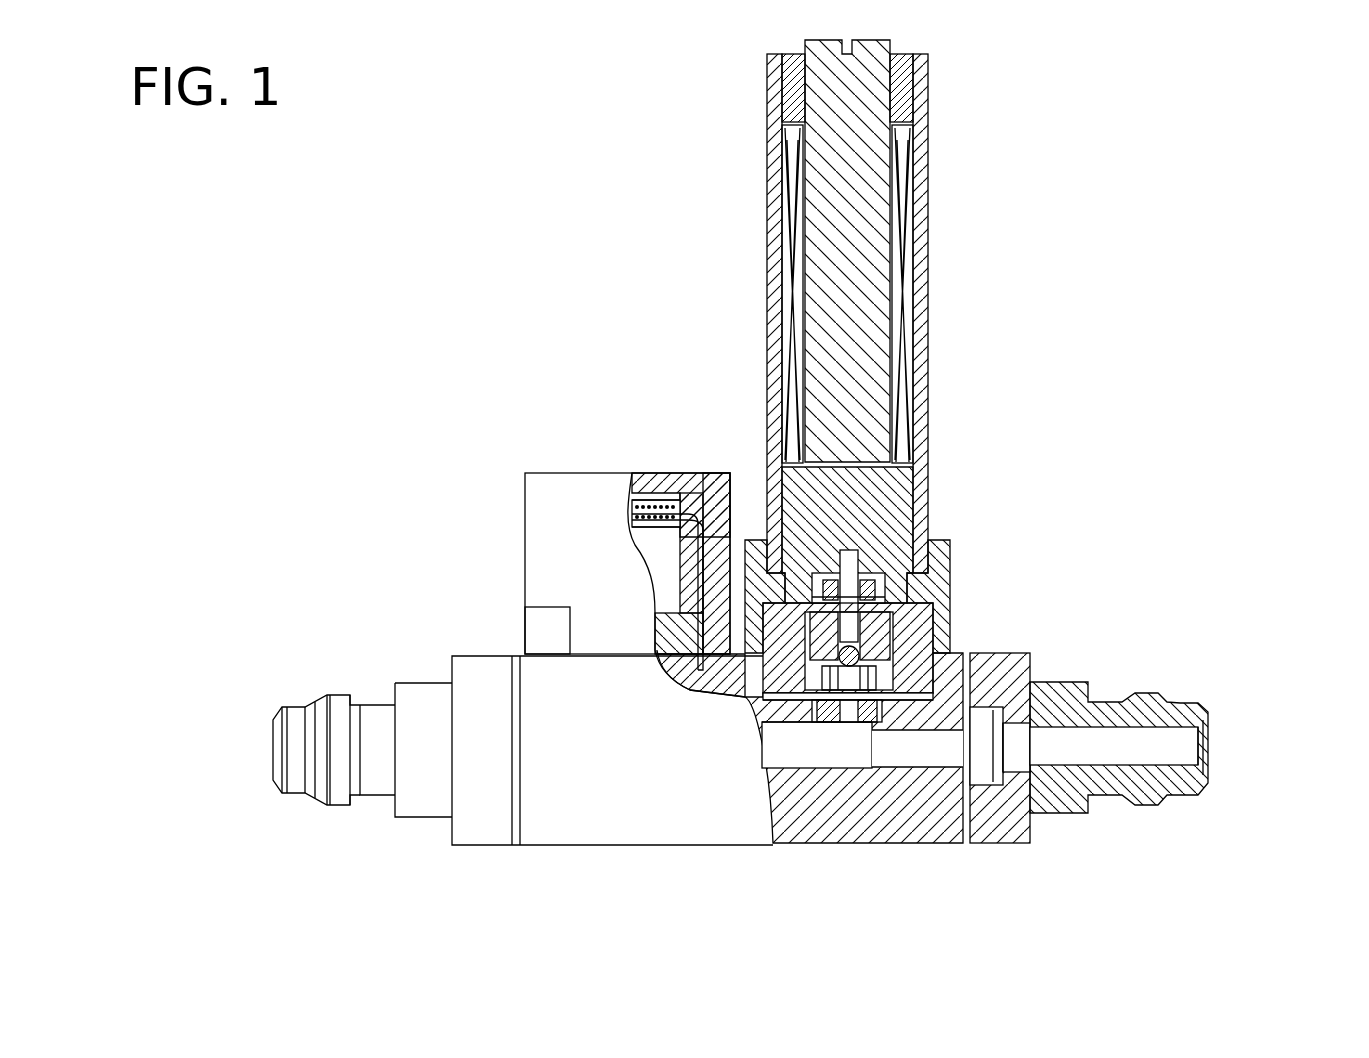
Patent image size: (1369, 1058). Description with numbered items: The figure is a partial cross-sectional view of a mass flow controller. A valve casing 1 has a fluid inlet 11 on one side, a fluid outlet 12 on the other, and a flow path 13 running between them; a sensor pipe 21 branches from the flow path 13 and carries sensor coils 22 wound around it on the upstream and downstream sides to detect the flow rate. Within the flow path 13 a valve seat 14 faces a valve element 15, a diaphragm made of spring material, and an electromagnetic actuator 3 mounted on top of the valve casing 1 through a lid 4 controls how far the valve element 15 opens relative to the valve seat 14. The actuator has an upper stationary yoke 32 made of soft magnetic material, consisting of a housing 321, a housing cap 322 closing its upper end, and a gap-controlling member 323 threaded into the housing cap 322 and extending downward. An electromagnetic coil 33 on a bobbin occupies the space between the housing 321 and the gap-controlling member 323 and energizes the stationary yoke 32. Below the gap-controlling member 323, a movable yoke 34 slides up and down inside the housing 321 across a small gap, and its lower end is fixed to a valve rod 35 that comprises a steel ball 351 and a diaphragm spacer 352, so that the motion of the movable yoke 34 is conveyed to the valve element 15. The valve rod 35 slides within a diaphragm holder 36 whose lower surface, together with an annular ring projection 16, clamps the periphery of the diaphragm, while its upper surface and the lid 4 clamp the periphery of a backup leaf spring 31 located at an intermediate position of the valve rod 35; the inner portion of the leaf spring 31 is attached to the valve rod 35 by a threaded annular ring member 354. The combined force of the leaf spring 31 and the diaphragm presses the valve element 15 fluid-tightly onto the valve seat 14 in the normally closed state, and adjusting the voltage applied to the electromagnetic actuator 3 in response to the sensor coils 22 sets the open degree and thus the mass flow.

The valve casing 1 is at (729, 774).
The fluid inlet 11 is at (280, 750).
The fluid outlet 12 is at (1210, 745).
The flow path 13 is at (780, 843).
The valve seat 14 is at (847, 843).
The valve element 15 is at (900, 745).
The annular ring projection 16 is at (762, 690).
The sensor pipe 21 is at (654, 549).
The sensor coils 22 is at (652, 492).
The electromagnetic actuator 3 is at (875, 366).
The backup leaf spring 31 is at (923, 585).
The upper stationary yoke 32 is at (882, 306).
The housing 321 is at (925, 258).
The housing cap 322 is at (900, 78).
The gap-controlling member 323 is at (830, 130).
The electromagnetic coil 33 is at (785, 178).
The movable yoke 34 is at (893, 480).
The valve rod 35 is at (898, 626).
The steel ball 351 is at (768, 722).
The diaphragm spacer 352 is at (790, 722).
The threaded annular ring member 354 is at (872, 553).
The diaphragm holder 36 is at (783, 618).
The lid 4 is at (952, 547).